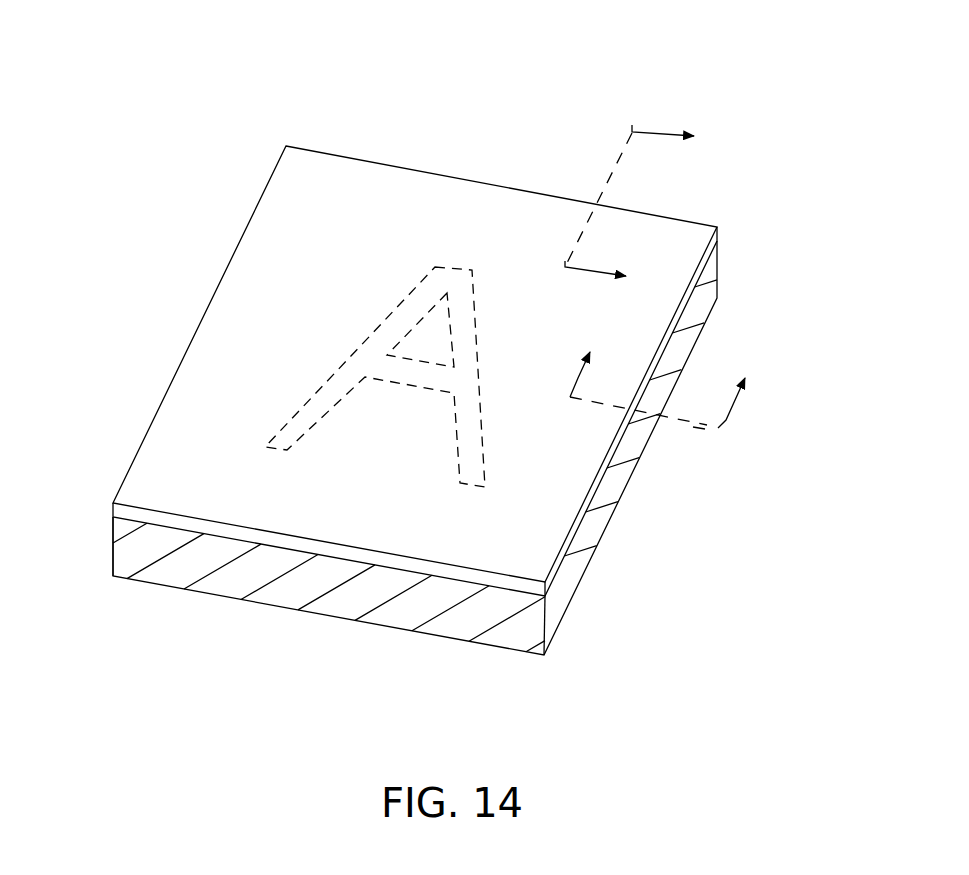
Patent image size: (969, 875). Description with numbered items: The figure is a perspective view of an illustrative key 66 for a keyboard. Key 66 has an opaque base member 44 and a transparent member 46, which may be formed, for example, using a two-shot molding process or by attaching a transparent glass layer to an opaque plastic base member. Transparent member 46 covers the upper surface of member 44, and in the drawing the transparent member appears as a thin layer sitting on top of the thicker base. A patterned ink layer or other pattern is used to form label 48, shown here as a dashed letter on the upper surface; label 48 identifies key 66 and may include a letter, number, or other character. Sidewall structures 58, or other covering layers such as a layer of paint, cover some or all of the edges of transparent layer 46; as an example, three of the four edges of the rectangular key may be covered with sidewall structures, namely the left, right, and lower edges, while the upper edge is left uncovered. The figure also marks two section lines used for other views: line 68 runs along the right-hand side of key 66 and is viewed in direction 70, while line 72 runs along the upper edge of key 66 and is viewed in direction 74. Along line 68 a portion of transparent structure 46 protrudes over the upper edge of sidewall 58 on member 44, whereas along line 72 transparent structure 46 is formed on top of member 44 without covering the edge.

The opaque base member 44 is at (408, 632).
The transparent member 46 is at (128, 484).
The label 48 is at (303, 403).
The sidewall structures 58 is at (123, 542).
The key 66 is at (530, 75).
The line 68 is at (697, 430).
The direction 70 is at (578, 378).
The line 72 is at (612, 172).
The direction 74 is at (660, 125).